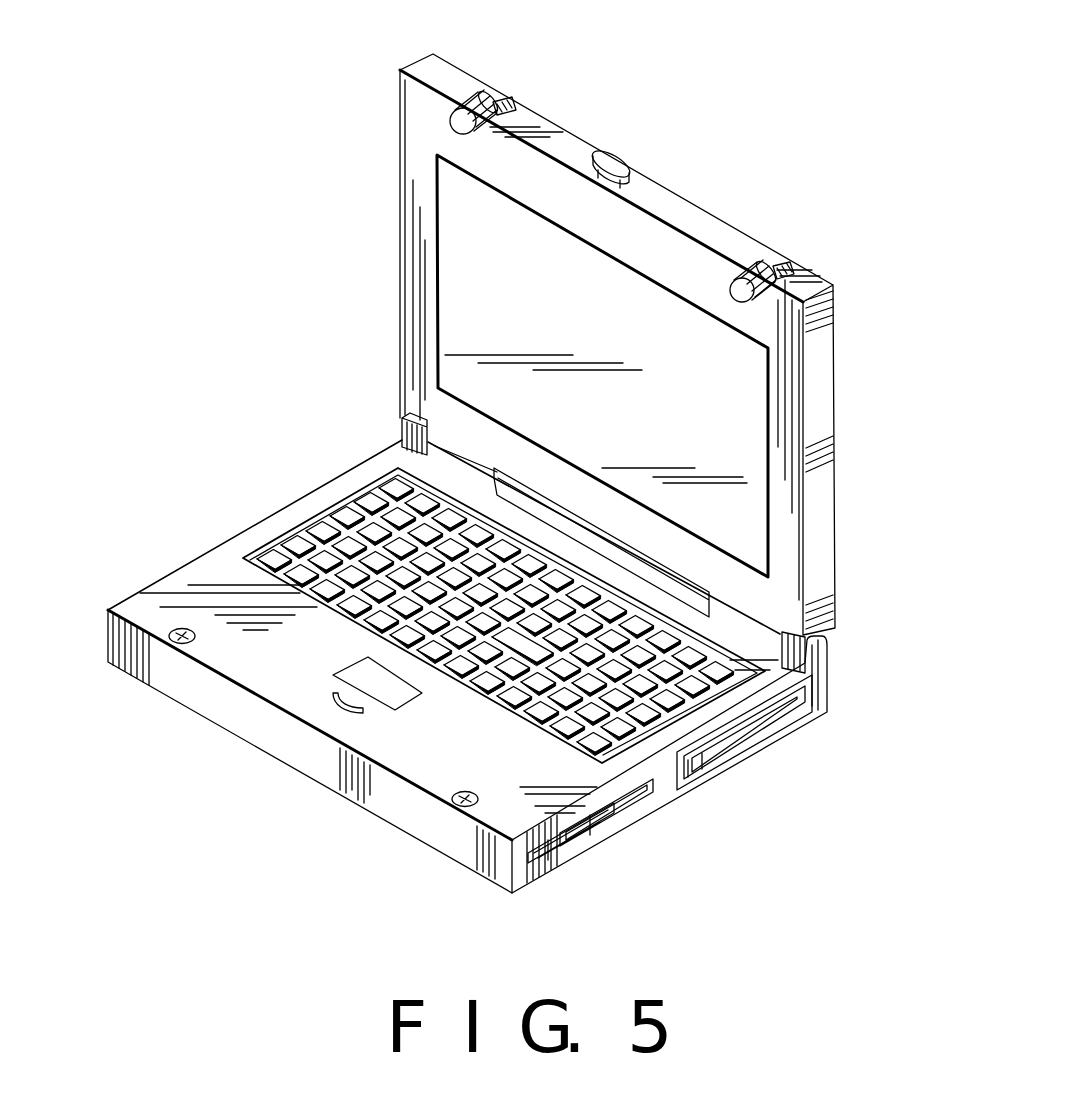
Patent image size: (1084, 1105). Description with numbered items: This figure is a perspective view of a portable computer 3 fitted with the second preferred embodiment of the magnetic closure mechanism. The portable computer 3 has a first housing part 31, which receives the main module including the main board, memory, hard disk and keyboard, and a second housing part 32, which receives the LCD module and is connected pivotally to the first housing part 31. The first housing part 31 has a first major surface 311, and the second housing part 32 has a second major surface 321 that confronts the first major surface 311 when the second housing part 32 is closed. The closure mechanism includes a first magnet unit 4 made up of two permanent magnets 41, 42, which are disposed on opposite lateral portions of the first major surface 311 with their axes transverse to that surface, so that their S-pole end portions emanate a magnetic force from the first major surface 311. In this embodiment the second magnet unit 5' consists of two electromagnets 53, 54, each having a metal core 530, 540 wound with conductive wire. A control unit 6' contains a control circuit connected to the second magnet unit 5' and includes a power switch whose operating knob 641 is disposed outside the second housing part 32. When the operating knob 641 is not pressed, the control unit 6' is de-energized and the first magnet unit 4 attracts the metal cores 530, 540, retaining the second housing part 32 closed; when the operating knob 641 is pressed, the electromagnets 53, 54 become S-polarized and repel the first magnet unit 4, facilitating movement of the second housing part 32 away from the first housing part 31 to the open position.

The portable computer 3 is at (866, 628).
The first housing part 31 is at (325, 770).
The first major surface 311 is at (227, 573).
The second housing part 32 is at (828, 450).
The second major surface 321 is at (450, 322).
The first magnet unit 4 is at (358, 868).
The permanent magnet 41 is at (450, 802).
The permanent magnet 42 is at (190, 640).
The second magnet unit 5' is at (637, 161).
The electromagnet 53 is at (773, 257).
The metal core 530 is at (783, 263).
The electromagnet 54 is at (482, 97).
The metal core 540 is at (497, 105).
The control unit 6' is at (662, 132).
The operating knob 641 is at (612, 166).